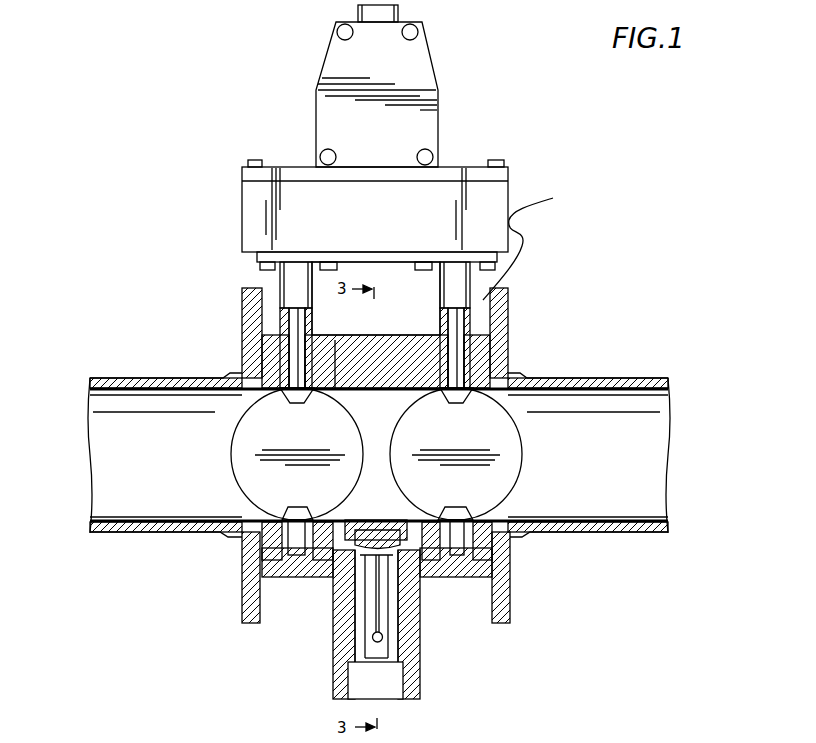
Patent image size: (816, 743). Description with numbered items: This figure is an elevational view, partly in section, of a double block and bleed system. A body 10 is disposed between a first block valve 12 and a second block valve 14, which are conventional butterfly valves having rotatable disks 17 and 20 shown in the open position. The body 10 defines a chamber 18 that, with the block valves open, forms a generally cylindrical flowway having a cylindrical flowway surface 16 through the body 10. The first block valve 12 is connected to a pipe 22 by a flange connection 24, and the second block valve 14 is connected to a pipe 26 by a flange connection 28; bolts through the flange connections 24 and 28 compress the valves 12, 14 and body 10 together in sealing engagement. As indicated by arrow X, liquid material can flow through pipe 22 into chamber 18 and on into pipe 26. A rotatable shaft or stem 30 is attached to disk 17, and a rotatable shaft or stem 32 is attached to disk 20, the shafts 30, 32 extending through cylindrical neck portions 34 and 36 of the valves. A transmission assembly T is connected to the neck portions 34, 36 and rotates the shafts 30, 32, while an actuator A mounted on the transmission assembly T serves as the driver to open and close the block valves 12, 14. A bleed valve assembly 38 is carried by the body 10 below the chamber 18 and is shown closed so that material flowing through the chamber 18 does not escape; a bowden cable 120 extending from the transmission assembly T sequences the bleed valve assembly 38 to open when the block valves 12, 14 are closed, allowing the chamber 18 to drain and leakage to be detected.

The body 10 is at (401, 320).
The first block valve 12 is at (228, 580).
The second block valve 14 is at (525, 577).
The cylindrical flowway surface 16 is at (360, 340).
The rotatable disk 17 is at (305, 443).
The chamber 18 is at (384, 428).
The rotatable disk 20 is at (464, 443).
The pipe 22 is at (118, 376).
The flange connection 24 is at (247, 300).
The pipe 26 is at (600, 378).
The flange connection 28 is at (503, 305).
The rotatable shaft or stem 30 is at (293, 322).
The rotatable shaft or stem 32 is at (456, 348).
The cylindrical neck portion 34 is at (286, 268).
The cylindrical neck portion 36 is at (474, 312).
The bleed valve assembly 38 is at (378, 510).
The bowden cable 120 is at (532, 241).
The actuator A is at (447, 68).
The transmission assembly T is at (518, 170).
The arrow X is at (125, 456).